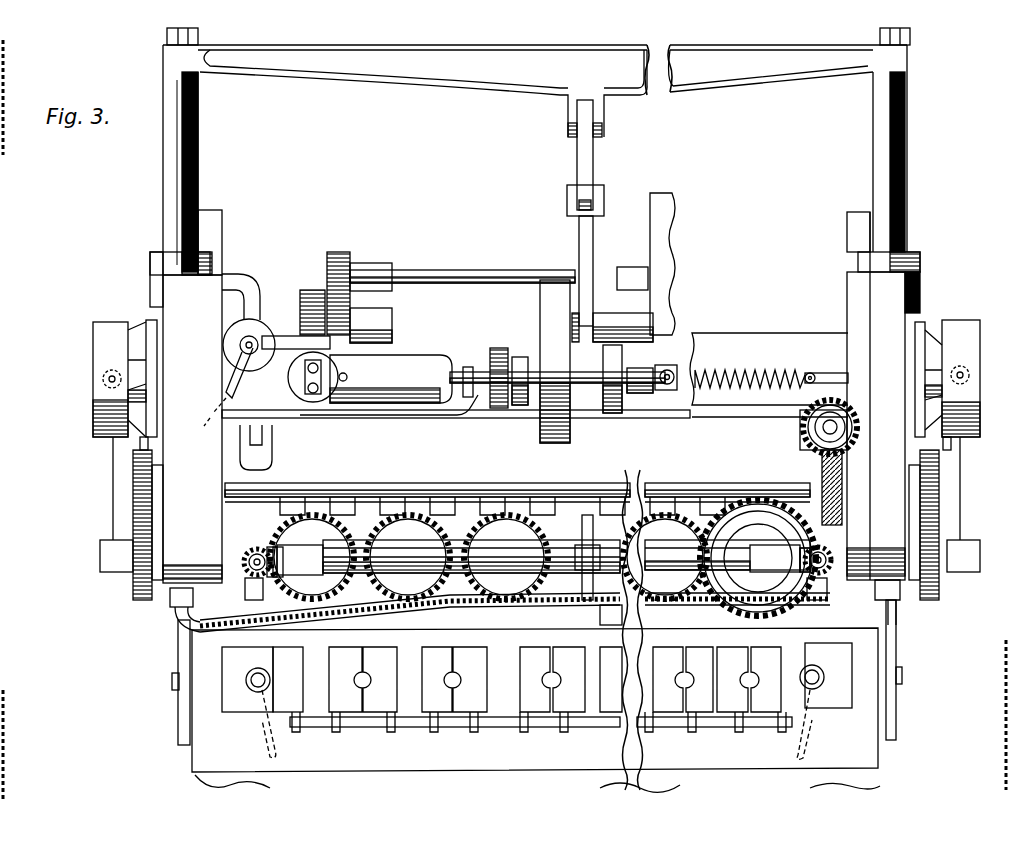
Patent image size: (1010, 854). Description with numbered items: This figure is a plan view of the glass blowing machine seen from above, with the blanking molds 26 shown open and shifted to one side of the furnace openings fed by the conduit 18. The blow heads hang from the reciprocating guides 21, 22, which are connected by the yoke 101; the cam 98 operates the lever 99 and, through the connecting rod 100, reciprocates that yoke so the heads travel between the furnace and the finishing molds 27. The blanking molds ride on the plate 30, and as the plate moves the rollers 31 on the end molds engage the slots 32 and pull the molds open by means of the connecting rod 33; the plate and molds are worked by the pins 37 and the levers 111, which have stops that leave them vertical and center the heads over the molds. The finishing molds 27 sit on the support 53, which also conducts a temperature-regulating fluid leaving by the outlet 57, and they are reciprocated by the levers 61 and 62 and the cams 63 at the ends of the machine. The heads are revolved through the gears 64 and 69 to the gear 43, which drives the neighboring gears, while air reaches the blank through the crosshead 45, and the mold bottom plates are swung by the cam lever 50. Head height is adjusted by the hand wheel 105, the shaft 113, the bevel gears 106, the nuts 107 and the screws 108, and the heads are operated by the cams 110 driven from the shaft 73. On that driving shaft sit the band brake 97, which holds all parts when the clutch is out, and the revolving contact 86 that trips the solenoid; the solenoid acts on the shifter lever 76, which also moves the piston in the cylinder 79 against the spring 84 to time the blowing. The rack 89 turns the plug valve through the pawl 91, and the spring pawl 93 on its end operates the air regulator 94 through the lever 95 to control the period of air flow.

The conduit 18 is at (195, 778).
The reciprocating guide 21 is at (214, 140).
The reciprocating guide 22 is at (900, 142).
The blanking mold 26 is at (385, 650).
The finishing mold 27 is at (520, 630).
The plate 30 is at (395, 765).
The roller 31 is at (258, 673).
The slot 32 is at (268, 748).
The connecting rod 33 is at (462, 727).
The pin 37 is at (172, 685).
The gear 43 is at (455, 510).
The crosshead 45 is at (672, 545).
The cam lever 50 is at (275, 424).
The support 53 is at (108, 562).
The outlet 57 is at (372, 472).
The lever 61 is at (110, 542).
The lever 62 is at (104, 380).
The cam 63 is at (140, 342).
The gear 64 is at (800, 418).
The gear 69 is at (758, 472).
The shaft 73 is at (818, 368).
The shifter lever 76 is at (488, 365).
The cylinder 79 is at (436, 352).
The spring 84 is at (752, 368).
The revolving contact 86 is at (520, 354).
The rack 89 is at (410, 418).
The pawl 91 is at (355, 368).
The spring pawl 93 is at (212, 408).
The air regulator 94 is at (272, 330).
The lever 95 is at (236, 370).
The band brake 97 is at (628, 360).
The cam 98 is at (540, 306).
The lever 99 is at (580, 242).
The connecting rod 100 is at (580, 160).
The yoke 101 is at (497, 55).
The hand wheel 105 is at (590, 520).
The bevel gear 106 is at (256, 548).
The nut 107 is at (245, 555).
The screw 108 is at (247, 552).
The cam 110 is at (262, 592).
The lever 111 is at (178, 722).
The shaft 113 is at (500, 548).